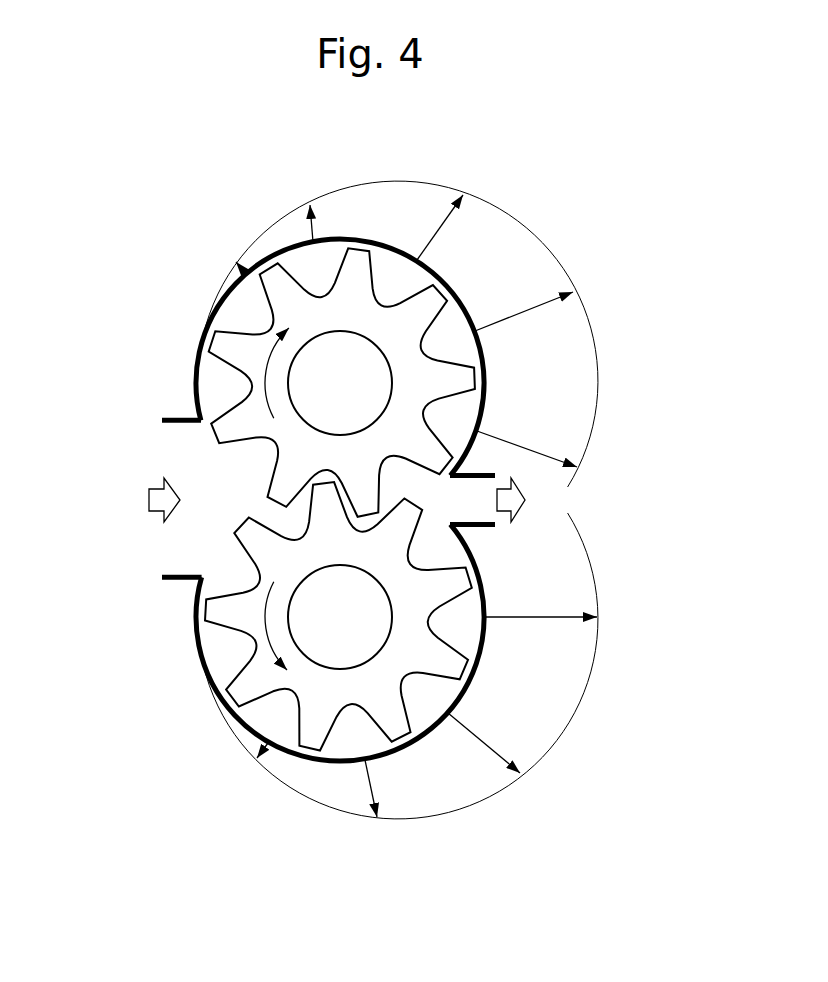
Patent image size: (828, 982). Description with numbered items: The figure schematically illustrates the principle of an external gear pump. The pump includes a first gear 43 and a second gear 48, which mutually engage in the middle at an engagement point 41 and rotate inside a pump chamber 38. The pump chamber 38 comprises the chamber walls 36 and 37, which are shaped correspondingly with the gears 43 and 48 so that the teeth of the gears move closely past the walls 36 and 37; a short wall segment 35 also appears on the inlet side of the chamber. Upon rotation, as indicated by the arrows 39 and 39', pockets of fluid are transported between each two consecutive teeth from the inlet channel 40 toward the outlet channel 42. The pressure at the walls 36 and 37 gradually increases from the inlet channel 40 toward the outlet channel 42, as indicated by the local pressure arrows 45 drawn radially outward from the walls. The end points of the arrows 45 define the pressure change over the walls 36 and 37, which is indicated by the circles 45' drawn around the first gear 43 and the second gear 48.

The inlet-side housing wall (upper) 35 is at (173, 421).
The chamber wall 36 is at (198, 622).
The chamber wall 37 is at (197, 372).
The pump chamber 38 is at (240, 720).
The rotation arrow 39 is at (225, 328).
The rotation arrow 39' is at (197, 626).
The inlet channel 40 is at (183, 460).
The engagement point 41 is at (343, 433).
The outlet channel 42 is at (472, 513).
The first gear 43 is at (275, 273).
The local pressure arrows 45 is at (452, 465).
The circles 45' is at (446, 500).
The second gear 48 is at (313, 737).